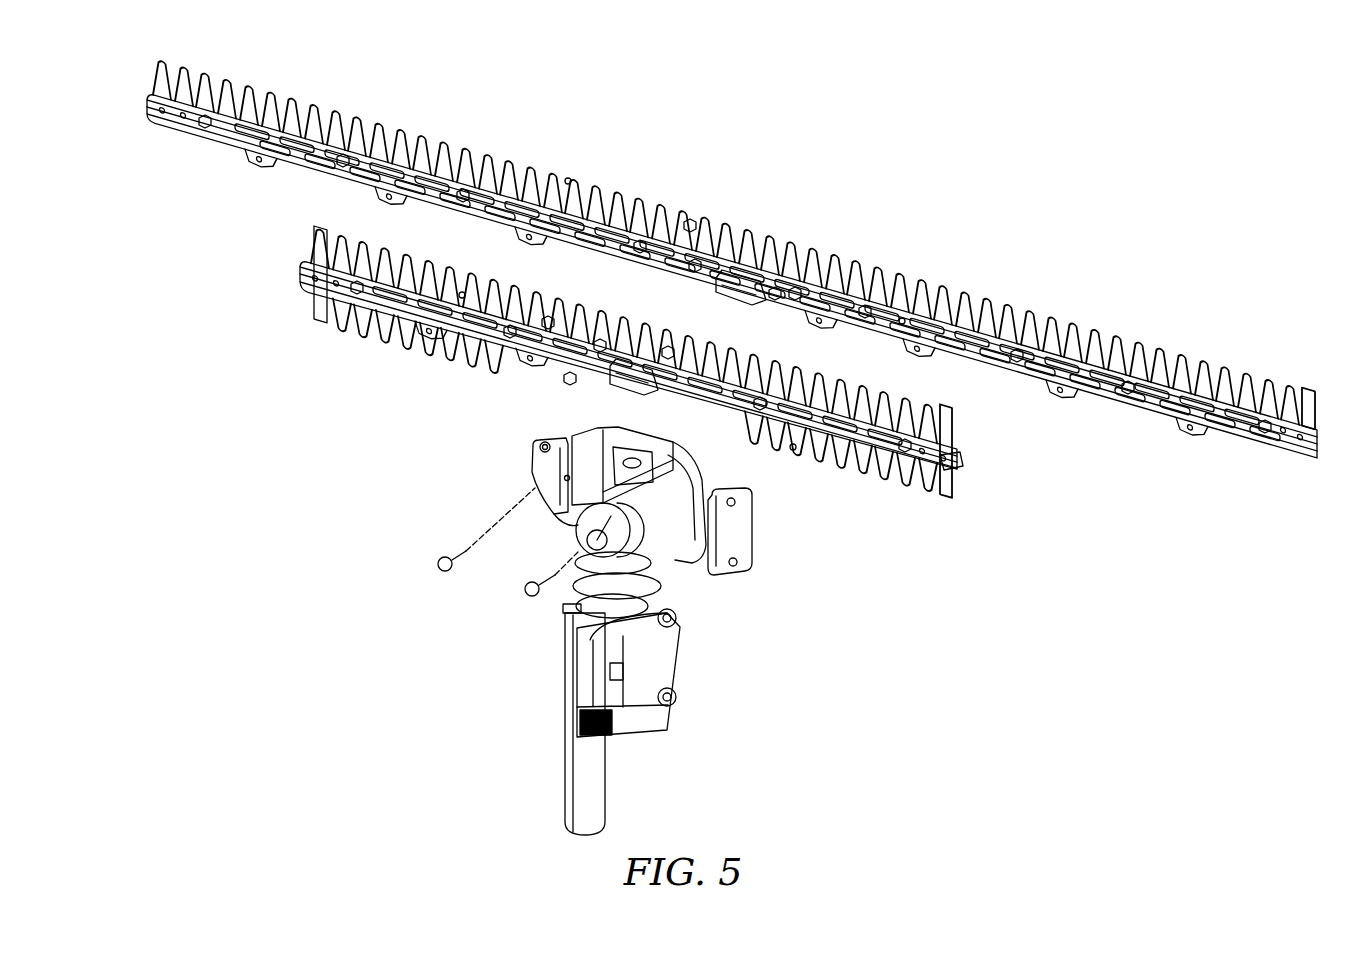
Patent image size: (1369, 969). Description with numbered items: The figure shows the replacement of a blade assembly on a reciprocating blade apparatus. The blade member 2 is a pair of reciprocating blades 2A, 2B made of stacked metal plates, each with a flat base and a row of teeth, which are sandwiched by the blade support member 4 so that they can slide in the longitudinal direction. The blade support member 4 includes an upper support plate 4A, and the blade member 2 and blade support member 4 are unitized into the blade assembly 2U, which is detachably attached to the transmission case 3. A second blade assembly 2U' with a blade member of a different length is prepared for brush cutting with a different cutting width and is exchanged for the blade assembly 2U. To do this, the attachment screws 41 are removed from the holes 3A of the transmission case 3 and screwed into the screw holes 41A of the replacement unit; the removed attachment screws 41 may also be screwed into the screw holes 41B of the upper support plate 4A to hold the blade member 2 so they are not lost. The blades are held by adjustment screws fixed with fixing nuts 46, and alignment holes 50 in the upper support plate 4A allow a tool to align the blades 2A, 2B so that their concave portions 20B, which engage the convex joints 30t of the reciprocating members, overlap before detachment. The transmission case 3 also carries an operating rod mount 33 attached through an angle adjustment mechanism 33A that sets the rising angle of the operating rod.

The blade member 2 is at (1199, 241).
The blade 2A is at (1112, 328).
The blade 2B is at (1180, 348).
The blade assembly 2U is at (628, 403).
The blade assembly 2U' is at (732, 282).
The transmission case 3 is at (703, 565).
The holes 3A is at (565, 450).
The blade support member 4 is at (1163, 420).
The upper support plate 4A is at (965, 458).
The concave portion 20B is at (714, 304).
The joint 30t is at (645, 425).
The operating rod mount 33 is at (672, 668).
The angle adjustment mechanism 33A is at (566, 612).
The attachment screws 41 is at (445, 555).
The screw holes 41A is at (697, 260).
The screw holes 41B is at (568, 178).
The fixing nuts 46 is at (345, 148).
The alignment holes 50 is at (690, 220).